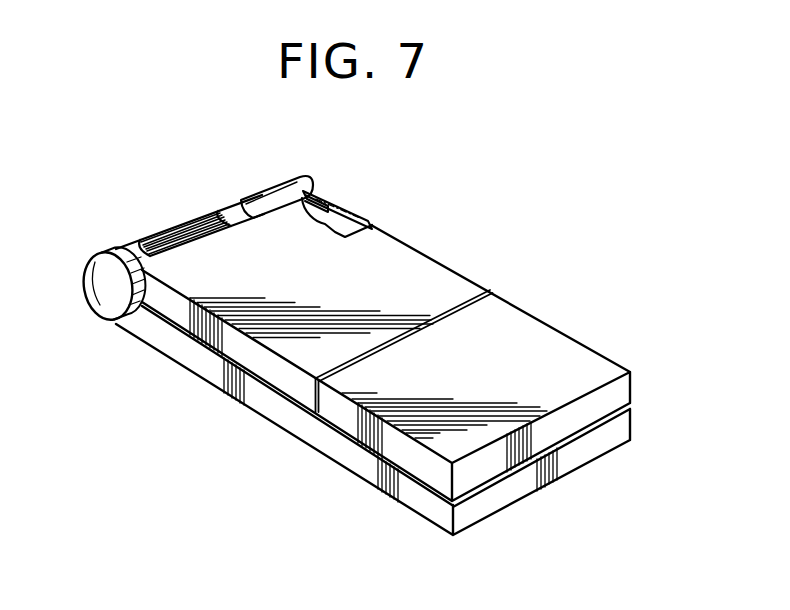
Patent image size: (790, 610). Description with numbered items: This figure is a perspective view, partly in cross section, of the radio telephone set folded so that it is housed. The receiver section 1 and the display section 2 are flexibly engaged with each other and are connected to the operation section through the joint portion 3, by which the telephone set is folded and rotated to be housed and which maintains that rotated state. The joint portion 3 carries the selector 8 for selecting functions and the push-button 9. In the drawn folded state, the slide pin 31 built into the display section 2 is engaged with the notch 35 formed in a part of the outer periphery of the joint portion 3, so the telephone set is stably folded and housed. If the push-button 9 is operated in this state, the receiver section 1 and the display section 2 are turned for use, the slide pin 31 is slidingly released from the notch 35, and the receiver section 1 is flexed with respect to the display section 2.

The receiver section 1 is at (548, 340).
The display section 2 is at (432, 267).
The joint portion 3 is at (274, 190).
The selector 8 is at (183, 227).
The push-button 9 is at (103, 304).
The slide pin 31 is at (368, 222).
The notch 35 is at (317, 193).